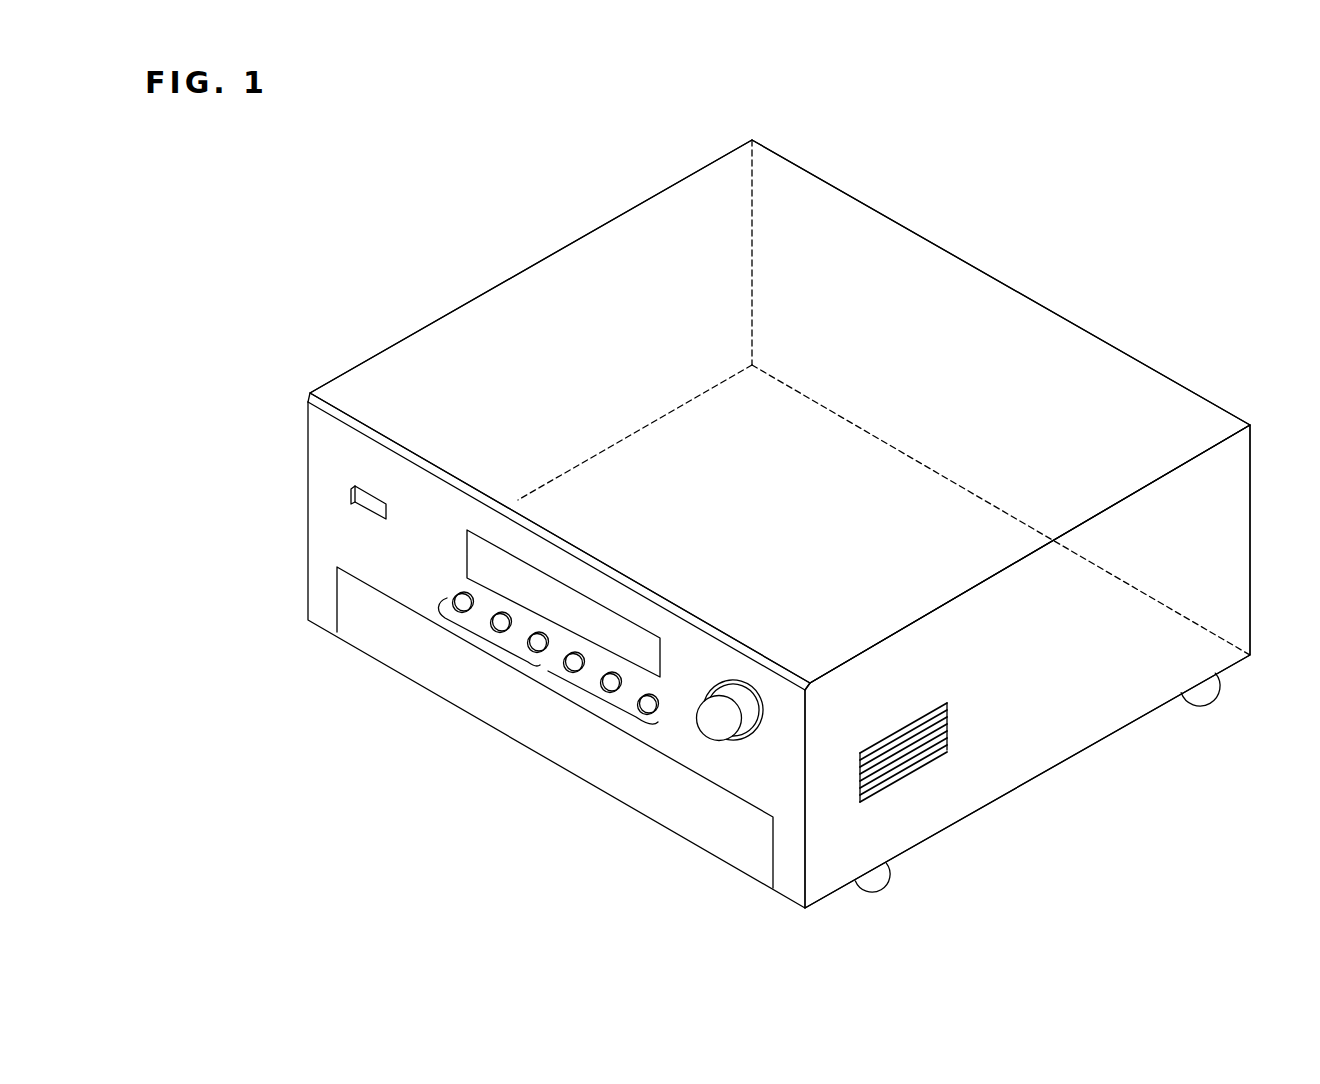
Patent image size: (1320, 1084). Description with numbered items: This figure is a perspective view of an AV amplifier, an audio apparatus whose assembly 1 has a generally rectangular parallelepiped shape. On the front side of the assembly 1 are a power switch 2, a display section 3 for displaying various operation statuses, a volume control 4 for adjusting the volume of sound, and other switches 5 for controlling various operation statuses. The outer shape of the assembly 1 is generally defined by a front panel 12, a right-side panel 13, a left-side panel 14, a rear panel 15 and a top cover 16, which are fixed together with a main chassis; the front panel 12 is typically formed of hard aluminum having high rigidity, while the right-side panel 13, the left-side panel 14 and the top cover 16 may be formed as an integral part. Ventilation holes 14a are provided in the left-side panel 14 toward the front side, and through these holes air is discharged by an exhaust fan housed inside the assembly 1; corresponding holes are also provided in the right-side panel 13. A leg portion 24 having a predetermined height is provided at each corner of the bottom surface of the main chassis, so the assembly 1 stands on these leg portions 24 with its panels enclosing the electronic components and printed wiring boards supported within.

The assembly 1 is at (552, 200).
The power switch 2 is at (358, 504).
The display section 3 is at (480, 561).
The volume control 4 is at (713, 720).
The other switches 5 is at (541, 668).
The front panel 12 is at (320, 583).
The right-side panel 13 is at (1013, 765).
The left-side panel 14 is at (508, 318).
The ventilation holes 14a is at (909, 787).
The rear panel 15 is at (1077, 372).
The top cover 16 is at (680, 225).
The leg portion 24 is at (872, 884).